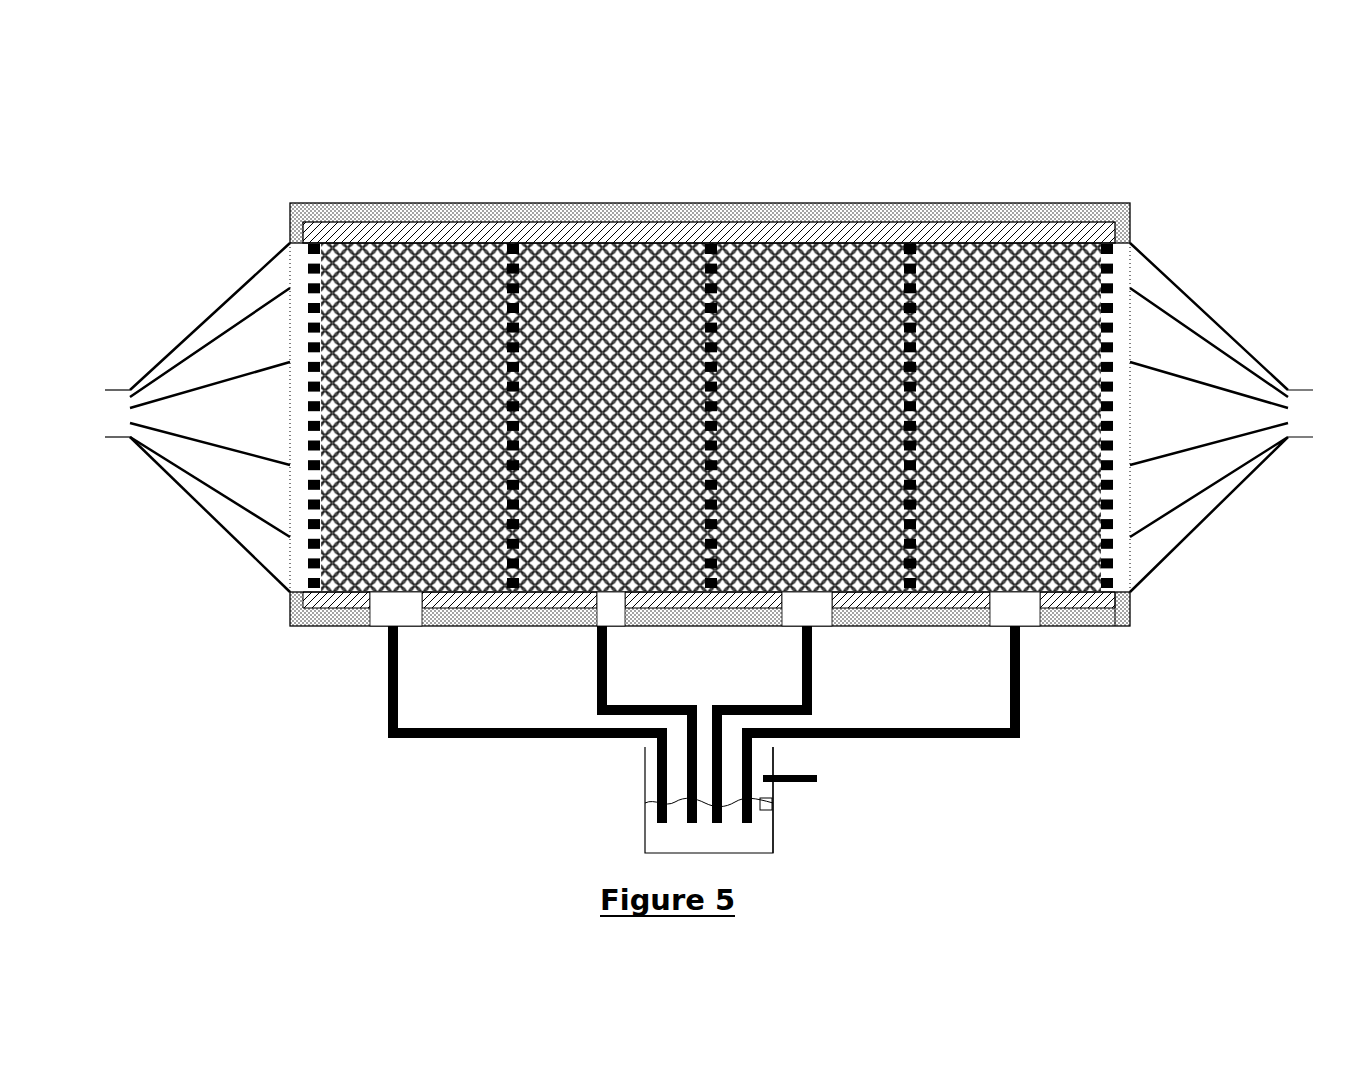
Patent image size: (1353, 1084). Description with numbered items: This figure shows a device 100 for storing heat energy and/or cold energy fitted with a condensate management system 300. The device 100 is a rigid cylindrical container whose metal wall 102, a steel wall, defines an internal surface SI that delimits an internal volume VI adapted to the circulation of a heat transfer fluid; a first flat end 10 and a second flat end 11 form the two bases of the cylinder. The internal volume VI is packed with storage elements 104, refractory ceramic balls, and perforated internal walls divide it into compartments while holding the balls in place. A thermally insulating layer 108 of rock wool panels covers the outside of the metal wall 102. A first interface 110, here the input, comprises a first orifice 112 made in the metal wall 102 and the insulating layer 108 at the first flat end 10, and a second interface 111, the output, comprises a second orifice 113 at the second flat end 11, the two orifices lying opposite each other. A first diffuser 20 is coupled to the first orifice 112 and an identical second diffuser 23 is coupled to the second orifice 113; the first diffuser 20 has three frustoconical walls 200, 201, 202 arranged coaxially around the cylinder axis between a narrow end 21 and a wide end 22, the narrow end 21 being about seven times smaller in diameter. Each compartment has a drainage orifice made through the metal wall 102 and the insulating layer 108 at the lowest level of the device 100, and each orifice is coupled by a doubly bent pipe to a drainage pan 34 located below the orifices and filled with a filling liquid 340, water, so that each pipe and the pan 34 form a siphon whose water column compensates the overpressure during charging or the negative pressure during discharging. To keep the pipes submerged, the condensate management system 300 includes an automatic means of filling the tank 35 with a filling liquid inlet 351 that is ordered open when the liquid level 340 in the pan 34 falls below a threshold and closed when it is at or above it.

The device for storing heat energy and/or cold energy 100 is at (678, 159).
The first flat end 10 is at (290, 218).
The metal wall 102 is at (735, 208).
The storage elements 104 is at (328, 250).
The thermally insulating layer 108 is at (805, 232).
The first orifice 112 is at (297, 240).
The second orifice 113 is at (1122, 240).
The internal volume VI is at (535, 262).
The second flat end 11 is at (740, 421).
The wide end 22 is at (288, 600).
The internal surface SI is at (1122, 626).
The condensate management system 300 is at (701, 752).
The drainage pan 34 is at (717, 813).
The filling liquid 340 is at (665, 833).
The automatic means of filling the tank 35 is at (802, 797).
The filling liquid inlet 351 is at (817, 779).
The first diffuser 20 is at (188, 407).
The narrow end 21 is at (128, 440).
The frustoconical wall 200 is at (168, 478).
The frustoconical wall 201 is at (210, 487).
The frustoconical wall 202 is at (270, 465).
The first interface 110 is at (175, 295).
The second diffuser 23 is at (1225, 389).
The second interface 111 is at (1268, 283).